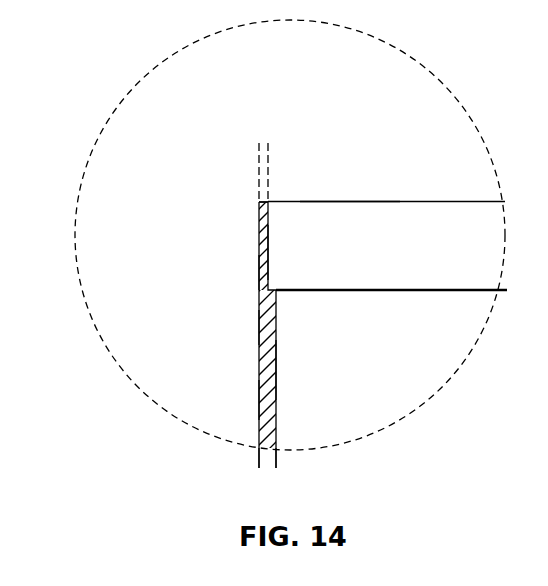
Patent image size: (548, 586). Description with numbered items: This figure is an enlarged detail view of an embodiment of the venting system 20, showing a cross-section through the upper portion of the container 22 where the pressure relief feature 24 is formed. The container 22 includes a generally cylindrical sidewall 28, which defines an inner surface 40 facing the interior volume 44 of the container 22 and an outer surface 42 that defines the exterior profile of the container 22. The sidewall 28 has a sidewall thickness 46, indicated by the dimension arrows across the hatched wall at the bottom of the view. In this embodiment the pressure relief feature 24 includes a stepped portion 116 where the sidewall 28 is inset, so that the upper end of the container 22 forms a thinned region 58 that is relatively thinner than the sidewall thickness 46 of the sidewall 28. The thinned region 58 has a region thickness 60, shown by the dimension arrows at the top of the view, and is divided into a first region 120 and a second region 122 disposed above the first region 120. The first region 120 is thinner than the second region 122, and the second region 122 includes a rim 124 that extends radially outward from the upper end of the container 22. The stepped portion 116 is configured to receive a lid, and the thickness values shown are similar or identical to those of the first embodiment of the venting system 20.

The venting system 20 is at (468, 70).
The container 22 is at (259, 370).
The pressure relief feature 24 is at (222, 236).
The sidewall 28 is at (259, 400).
The inner surface 40 is at (277, 375).
The outer surface 42 is at (259, 327).
The interior volume 44 is at (426, 362).
The sidewall thickness 46 is at (305, 460).
The thinned region 58 is at (259, 275).
The region thickness 60 is at (298, 150).
The stepped portion 116 is at (343, 262).
The first region 120 is at (269, 250).
The second region 122 is at (258, 212).
The rim 124 is at (258, 218).